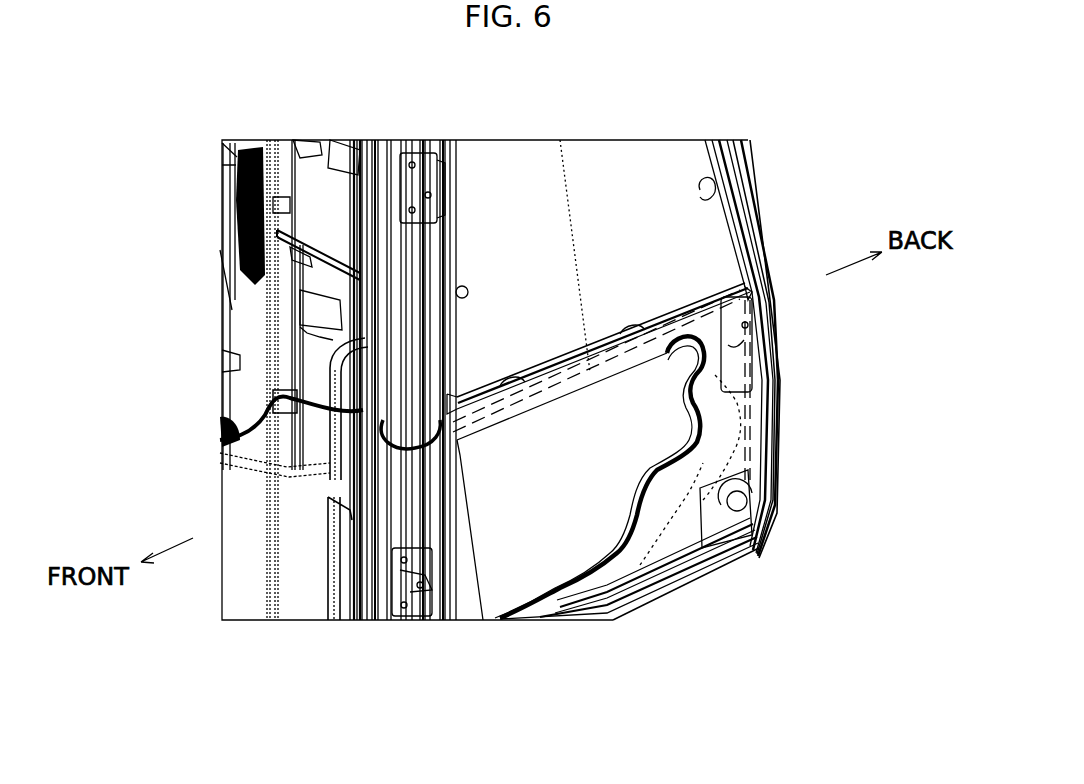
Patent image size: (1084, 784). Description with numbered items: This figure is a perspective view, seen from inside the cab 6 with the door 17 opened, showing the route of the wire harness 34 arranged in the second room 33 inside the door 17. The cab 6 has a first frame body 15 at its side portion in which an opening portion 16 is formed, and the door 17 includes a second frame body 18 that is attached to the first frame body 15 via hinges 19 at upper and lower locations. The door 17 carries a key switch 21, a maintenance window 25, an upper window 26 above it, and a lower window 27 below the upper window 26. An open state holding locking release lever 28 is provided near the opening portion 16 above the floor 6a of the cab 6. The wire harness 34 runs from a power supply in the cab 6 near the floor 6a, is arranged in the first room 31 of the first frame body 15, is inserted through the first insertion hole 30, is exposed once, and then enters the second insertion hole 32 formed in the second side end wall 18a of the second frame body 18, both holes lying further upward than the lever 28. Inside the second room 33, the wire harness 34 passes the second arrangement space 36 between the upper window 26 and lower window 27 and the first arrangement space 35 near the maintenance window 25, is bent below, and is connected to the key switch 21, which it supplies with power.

The cab 6 is at (357, 332).
The first frame body 15 is at (378, 126).
The floor 6a is at (266, 583).
The opening portion 16 is at (355, 172).
The door 17 is at (770, 176).
The second frame body 18 is at (677, 548).
The second side end wall 18a is at (430, 240).
The hinges 19 is at (399, 138).
The key switch 21 is at (748, 513).
The maintenance window 25 is at (745, 356).
The upper window 26 is at (638, 160).
The lower window 27 is at (556, 567).
The open state holding locking release lever 28 is at (323, 520).
The first insertion hole 30 is at (367, 400).
The first room 31 is at (380, 317).
The second insertion hole 32 is at (432, 410).
The second room 33 is at (598, 348).
The wire harness 34 is at (243, 440).
The first arrangement space 35 is at (768, 292).
The second arrangement space 36 is at (608, 352).